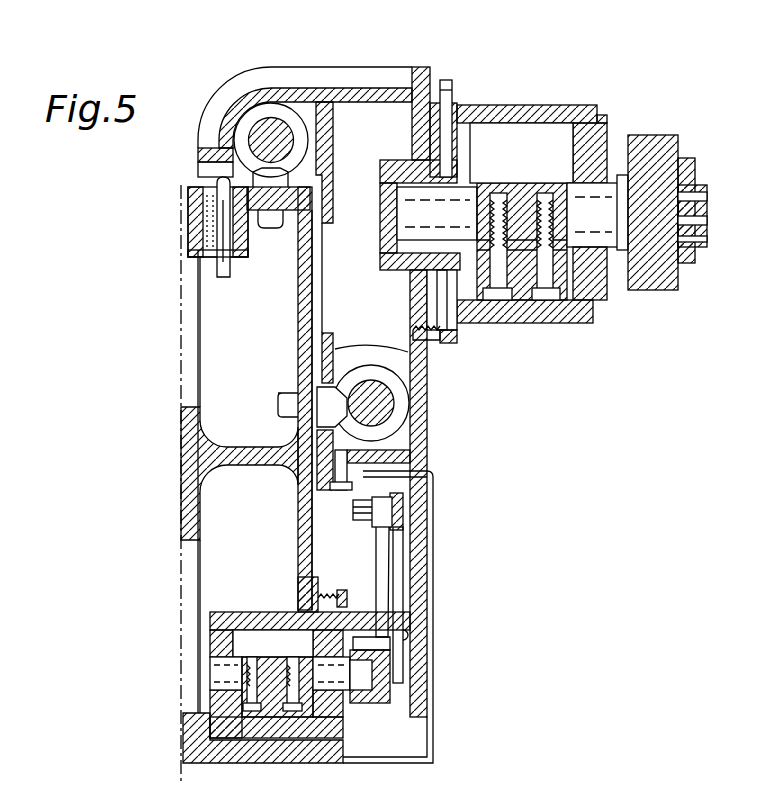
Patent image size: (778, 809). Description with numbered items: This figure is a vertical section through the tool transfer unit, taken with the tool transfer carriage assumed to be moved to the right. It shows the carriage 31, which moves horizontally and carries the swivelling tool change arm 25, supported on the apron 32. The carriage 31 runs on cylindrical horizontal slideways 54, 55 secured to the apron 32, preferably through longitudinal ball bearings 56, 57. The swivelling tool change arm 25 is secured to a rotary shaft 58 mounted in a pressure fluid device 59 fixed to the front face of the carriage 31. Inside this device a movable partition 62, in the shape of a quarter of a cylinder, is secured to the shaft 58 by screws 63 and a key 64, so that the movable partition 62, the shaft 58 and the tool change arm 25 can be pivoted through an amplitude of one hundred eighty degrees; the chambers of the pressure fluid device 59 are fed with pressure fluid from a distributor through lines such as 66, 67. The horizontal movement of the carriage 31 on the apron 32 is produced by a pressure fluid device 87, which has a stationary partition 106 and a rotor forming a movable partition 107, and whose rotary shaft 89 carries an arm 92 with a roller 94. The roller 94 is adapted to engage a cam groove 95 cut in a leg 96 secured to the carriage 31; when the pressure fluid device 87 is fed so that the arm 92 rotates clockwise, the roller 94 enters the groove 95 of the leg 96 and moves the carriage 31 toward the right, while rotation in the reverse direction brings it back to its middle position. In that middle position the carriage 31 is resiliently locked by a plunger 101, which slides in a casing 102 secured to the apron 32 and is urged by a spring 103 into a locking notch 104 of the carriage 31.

The swivelling tool change arm 25 is at (653, 282).
The carriage 31 is at (284, 73).
The apron 32 is at (200, 458).
The horizontal slideway 54 is at (380, 420).
The horizontal slideway 55 is at (258, 127).
The longitudinal ball bearing 56 is at (393, 386).
The longitudinal ball bearing 57 is at (297, 122).
The rotary shaft 58 is at (608, 195).
The pressure fluid device 59 is at (538, 322).
The movable partition 62 is at (572, 282).
The screws 63 is at (508, 303).
The key 64 is at (517, 233).
The line 66 is at (447, 140).
The line 67 is at (476, 327).
The pressure fluid device 87 is at (247, 610).
The rotary shaft 89 is at (213, 674).
The arm 92 is at (382, 563).
The roller 94 is at (403, 509).
The cam groove 95 is at (409, 648).
The leg 96 is at (413, 596).
The plunger 101 is at (218, 265).
The casing 102 is at (203, 257).
The spring 103 is at (237, 262).
The locking notch 104 is at (202, 166).
The stationary partition 106 is at (250, 640).
The movable partition 107 is at (272, 710).